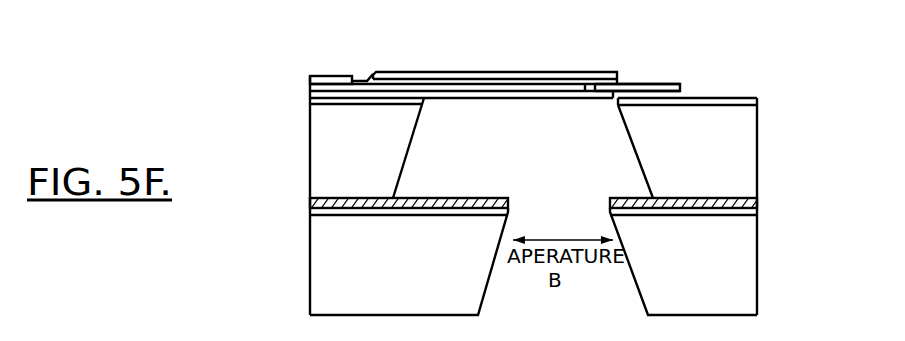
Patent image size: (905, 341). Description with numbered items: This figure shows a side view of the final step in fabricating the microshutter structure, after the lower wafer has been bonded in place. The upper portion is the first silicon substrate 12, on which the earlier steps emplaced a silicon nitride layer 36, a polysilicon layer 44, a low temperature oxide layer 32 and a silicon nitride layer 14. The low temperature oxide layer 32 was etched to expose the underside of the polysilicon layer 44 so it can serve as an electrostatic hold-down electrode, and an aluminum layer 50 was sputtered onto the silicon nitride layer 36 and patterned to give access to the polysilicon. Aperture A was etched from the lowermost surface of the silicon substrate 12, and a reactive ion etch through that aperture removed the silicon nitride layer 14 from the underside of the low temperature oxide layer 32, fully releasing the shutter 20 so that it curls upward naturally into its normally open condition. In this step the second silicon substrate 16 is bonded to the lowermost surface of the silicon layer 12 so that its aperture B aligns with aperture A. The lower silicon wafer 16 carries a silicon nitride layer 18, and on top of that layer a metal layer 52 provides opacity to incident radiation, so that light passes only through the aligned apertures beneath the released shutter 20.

The first silicon substrate 12 is at (736, 135).
The silicon nitride layer 14 is at (729, 99).
The second silicon substrate 16 is at (733, 258).
The silicon nitride layer 18 is at (753, 213).
The microshutter 20 is at (519, 60).
The low temperature oxide layer 32 is at (386, 95).
The silicon nitride layer 36 is at (362, 79).
The polysilicon layer 44 is at (669, 86).
The aluminum layer 50 is at (449, 72).
The metal layer 52 is at (310, 203).